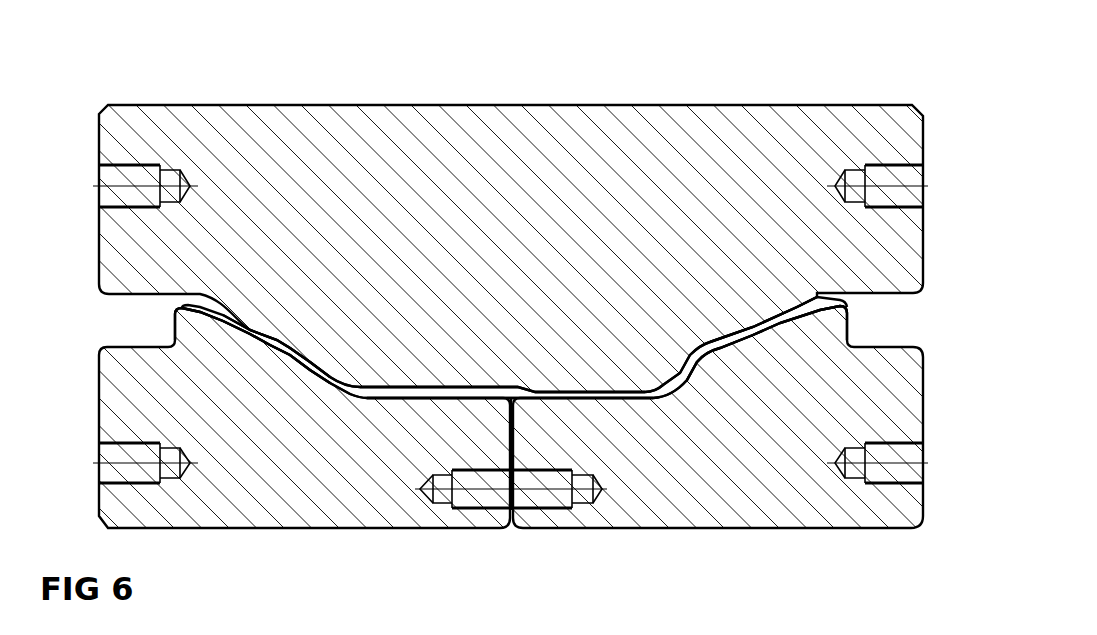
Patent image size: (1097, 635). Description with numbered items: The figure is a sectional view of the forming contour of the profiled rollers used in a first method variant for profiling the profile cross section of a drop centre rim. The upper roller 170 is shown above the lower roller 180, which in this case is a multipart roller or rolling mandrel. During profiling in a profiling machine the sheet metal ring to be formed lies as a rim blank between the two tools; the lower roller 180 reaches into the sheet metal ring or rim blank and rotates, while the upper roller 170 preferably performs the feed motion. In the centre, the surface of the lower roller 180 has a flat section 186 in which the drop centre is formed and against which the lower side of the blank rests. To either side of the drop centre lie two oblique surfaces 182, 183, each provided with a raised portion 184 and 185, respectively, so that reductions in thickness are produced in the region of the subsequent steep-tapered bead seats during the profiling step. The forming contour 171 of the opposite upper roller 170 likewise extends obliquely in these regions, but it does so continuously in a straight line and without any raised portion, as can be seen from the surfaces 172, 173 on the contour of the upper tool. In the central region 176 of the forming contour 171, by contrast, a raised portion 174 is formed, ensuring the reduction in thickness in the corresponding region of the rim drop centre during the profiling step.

The upper roller 170 is at (828, 133).
The forming contour 171 is at (875, 293).
The oblique surface 172 is at (777, 310).
The oblique surface 173 is at (250, 317).
The raised portion 174 is at (588, 392).
The central region 176 is at (458, 387).
The lower roller 180 is at (633, 505).
The oblique surface 182 is at (221, 316).
The oblique surface 183 is at (790, 318).
The raised portion 184 is at (272, 343).
The raised portion 185 is at (750, 338).
The flat section 186 is at (382, 398).